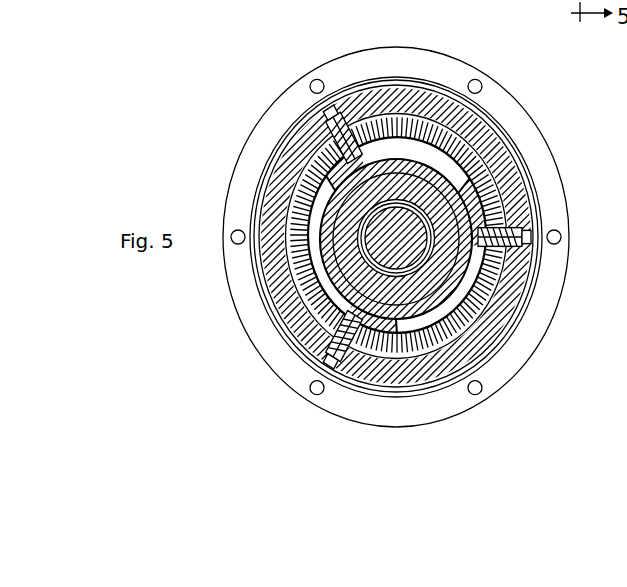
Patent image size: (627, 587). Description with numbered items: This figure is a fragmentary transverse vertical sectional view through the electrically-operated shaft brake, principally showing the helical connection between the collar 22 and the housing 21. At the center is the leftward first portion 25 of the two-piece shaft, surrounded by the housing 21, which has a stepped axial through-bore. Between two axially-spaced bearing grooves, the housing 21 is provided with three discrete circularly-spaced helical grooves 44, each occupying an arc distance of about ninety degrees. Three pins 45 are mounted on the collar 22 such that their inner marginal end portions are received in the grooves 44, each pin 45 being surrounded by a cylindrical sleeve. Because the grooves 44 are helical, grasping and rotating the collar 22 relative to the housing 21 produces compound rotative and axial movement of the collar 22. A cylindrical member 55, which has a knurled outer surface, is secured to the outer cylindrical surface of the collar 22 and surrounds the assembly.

The housing 21 is at (560, 151).
The collar 22 is at (488, 212).
The first portion 25 is at (482, 325).
The helical grooves 44 is at (437, 148).
The pins 45 is at (314, 122).
The cylindrical member 55 is at (400, 87).